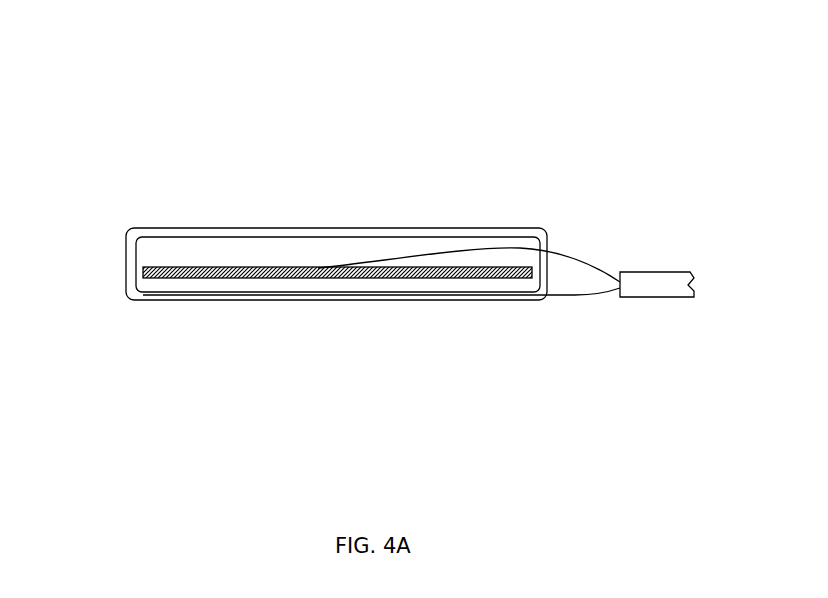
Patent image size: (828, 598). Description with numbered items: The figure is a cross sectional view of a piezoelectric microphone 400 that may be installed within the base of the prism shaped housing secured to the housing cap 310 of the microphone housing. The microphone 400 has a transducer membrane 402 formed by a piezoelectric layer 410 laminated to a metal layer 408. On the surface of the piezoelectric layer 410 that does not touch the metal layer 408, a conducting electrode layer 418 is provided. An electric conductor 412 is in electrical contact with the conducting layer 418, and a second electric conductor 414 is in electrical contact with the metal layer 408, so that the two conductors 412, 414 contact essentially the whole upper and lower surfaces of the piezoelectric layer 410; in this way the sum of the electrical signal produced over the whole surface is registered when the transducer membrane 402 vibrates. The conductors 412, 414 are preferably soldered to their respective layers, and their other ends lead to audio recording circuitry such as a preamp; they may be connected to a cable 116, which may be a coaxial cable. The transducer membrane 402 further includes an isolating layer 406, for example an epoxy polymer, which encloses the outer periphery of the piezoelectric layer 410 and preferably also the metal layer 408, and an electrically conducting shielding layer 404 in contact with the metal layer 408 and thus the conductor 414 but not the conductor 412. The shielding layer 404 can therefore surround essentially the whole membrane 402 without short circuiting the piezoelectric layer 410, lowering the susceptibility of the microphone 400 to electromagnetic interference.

The housing cap 310 is at (573, 57).
The piezoelectric microphone 400 is at (135, 181).
The transducer membrane 402 is at (130, 226).
The shielding layer 404 is at (402, 235).
The isolating layer 406 is at (234, 253).
The metal layer 408 is at (257, 286).
The piezoelectric layer 410 is at (208, 276).
The electric conductor 412 is at (580, 255).
The electric conductor 414 is at (582, 298).
The conducting electrode layer 418 is at (307, 266).
The cable 116 is at (657, 277).